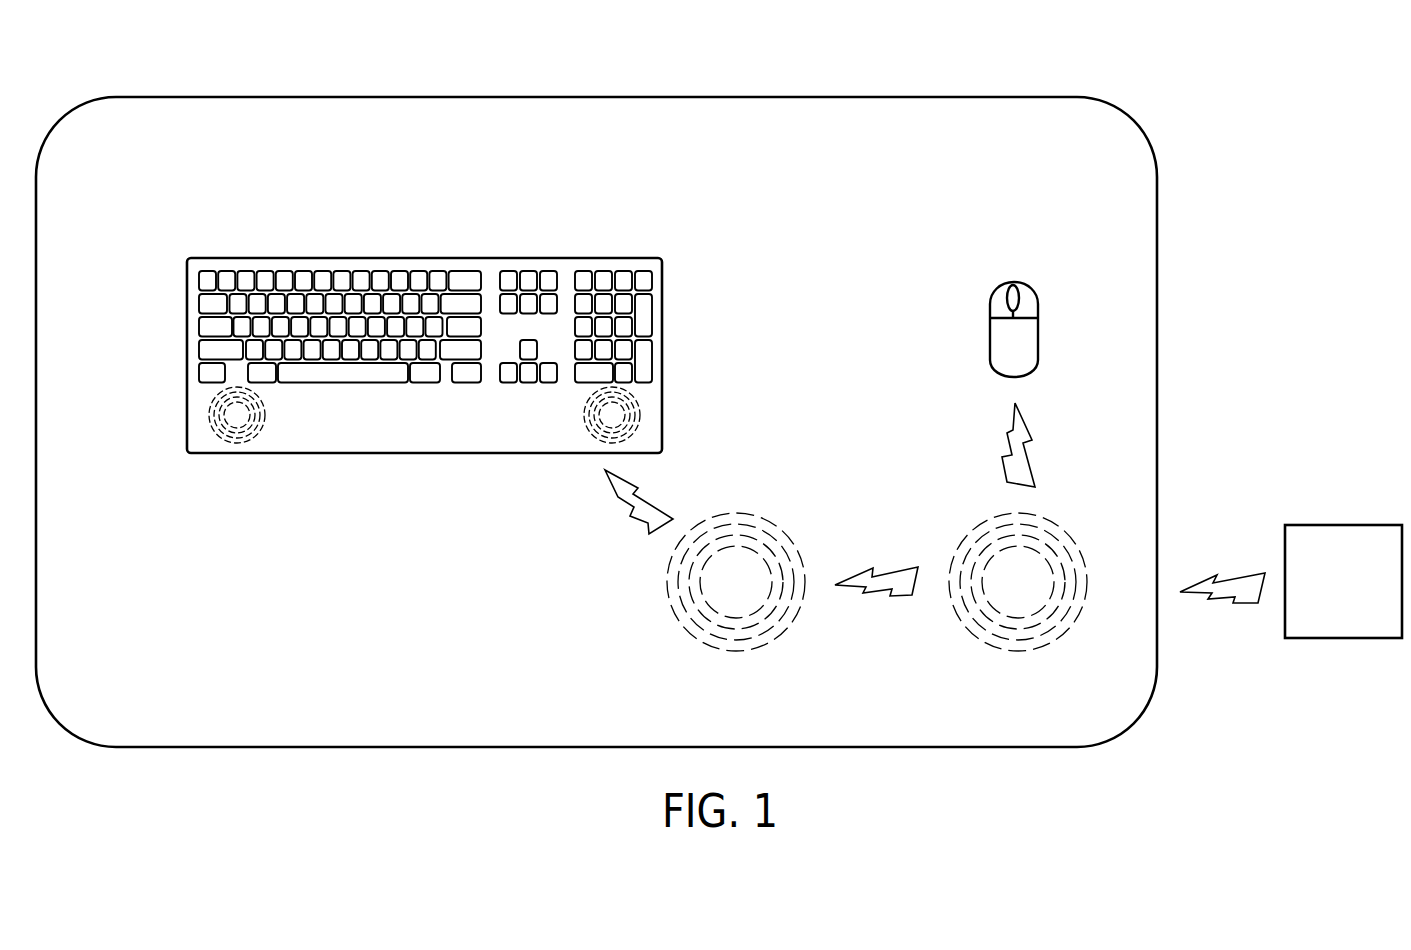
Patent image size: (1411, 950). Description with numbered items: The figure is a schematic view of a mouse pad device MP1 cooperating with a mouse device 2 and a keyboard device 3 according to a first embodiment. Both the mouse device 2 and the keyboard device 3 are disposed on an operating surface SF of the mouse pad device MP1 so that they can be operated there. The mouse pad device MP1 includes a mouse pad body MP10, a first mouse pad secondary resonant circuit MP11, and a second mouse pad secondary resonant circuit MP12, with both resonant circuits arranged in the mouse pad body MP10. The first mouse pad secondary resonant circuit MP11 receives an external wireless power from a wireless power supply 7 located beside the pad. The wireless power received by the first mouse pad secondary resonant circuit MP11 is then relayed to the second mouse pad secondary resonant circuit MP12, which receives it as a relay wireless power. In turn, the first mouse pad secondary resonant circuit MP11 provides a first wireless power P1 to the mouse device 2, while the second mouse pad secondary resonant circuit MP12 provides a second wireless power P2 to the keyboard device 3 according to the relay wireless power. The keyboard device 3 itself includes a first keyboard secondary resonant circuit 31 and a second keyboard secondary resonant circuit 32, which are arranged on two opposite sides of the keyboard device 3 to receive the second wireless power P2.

The mouse pad device MP1 is at (650, 387).
The operating surface SF is at (628, 387).
The mouse pad body MP10 is at (1029, 119).
The mouse device 2 is at (1022, 282).
The keyboard device 3 is at (457, 393).
The first keyboard secondary resonant circuit 31 is at (641, 408).
The second keyboard secondary resonant circuit 32 is at (254, 441).
The first mouse pad secondary resonant circuit MP11 is at (965, 628).
The second mouse pad secondary resonant circuit MP12 is at (683, 628).
The first wireless power P1 is at (1043, 420).
The second wireless power P2 is at (648, 475).
The wireless power supply 7 is at (1343, 525).